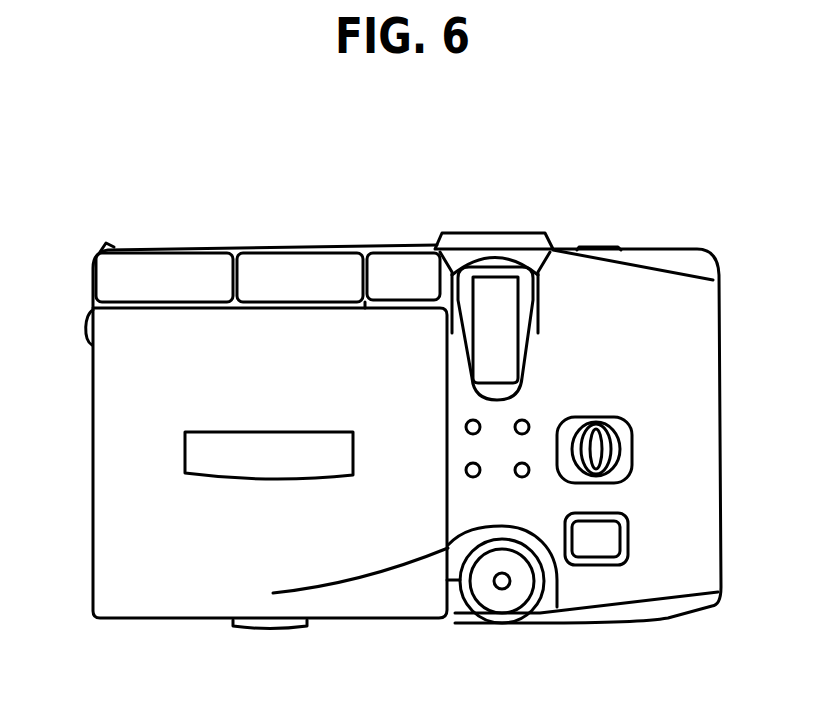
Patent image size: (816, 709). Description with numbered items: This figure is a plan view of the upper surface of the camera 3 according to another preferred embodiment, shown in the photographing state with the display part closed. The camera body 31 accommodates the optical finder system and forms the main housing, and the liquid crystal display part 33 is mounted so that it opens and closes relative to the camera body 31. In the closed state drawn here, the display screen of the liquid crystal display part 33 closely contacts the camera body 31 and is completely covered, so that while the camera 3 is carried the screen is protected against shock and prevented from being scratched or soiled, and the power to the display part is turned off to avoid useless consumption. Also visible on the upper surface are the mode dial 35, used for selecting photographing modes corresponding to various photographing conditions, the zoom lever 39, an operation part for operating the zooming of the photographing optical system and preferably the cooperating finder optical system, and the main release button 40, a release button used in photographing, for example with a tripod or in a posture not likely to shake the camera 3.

The camera 3 is at (408, 214).
The camera body 31 is at (692, 250).
The liquid crystal display part 33 is at (97, 583).
The mode dial 35 is at (510, 605).
The zoom lever 39 is at (607, 440).
The main release button 40 is at (603, 535).